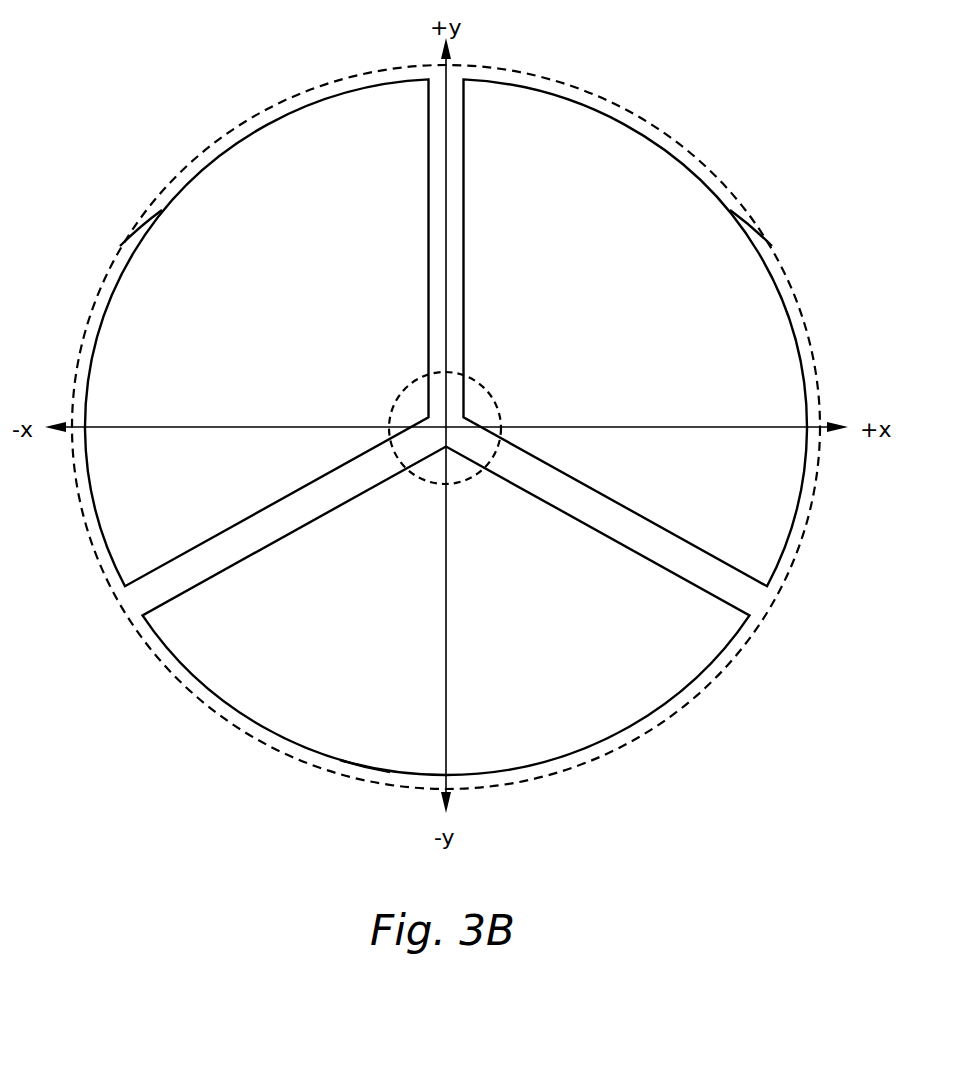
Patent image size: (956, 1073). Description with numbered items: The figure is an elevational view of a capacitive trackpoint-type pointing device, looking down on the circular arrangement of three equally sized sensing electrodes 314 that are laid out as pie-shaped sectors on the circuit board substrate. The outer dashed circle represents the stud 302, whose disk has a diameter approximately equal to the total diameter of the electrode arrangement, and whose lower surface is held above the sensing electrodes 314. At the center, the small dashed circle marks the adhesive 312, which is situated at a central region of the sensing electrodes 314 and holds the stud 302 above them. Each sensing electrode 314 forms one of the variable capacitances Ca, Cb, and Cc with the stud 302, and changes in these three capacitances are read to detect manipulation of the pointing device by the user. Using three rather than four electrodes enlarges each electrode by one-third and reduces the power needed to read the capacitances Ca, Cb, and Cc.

The stud 302 is at (580, 88).
The adhesive 312 is at (492, 396).
The sensing electrodes 314 is at (309, 348).
The variable capacitance Ca is at (157, 212).
The variable capacitance Cb is at (737, 213).
The variable capacitance Cc is at (364, 774).